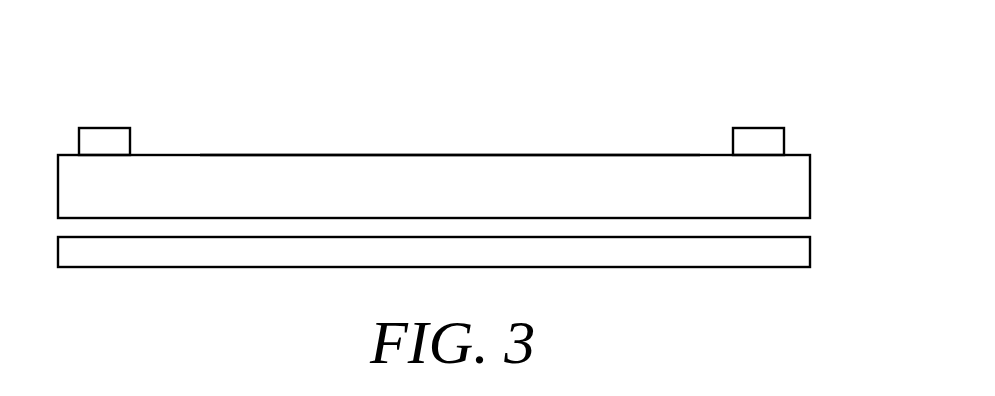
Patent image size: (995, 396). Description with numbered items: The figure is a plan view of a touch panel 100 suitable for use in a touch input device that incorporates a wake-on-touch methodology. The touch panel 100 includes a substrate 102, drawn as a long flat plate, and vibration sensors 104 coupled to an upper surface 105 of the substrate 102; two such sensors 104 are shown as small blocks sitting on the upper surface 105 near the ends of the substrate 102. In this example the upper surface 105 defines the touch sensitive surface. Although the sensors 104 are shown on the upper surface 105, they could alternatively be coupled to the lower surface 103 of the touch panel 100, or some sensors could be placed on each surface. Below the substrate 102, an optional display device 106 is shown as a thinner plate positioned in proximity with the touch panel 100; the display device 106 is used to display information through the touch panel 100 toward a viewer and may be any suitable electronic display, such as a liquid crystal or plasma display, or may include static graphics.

The touch panel 100 is at (321, 113).
The substrate 102 is at (810, 192).
The lower surface 103 is at (199, 218).
The vibration sensors 104 is at (104, 128).
The upper surface 105 is at (579, 155).
The display device 106 is at (670, 252).